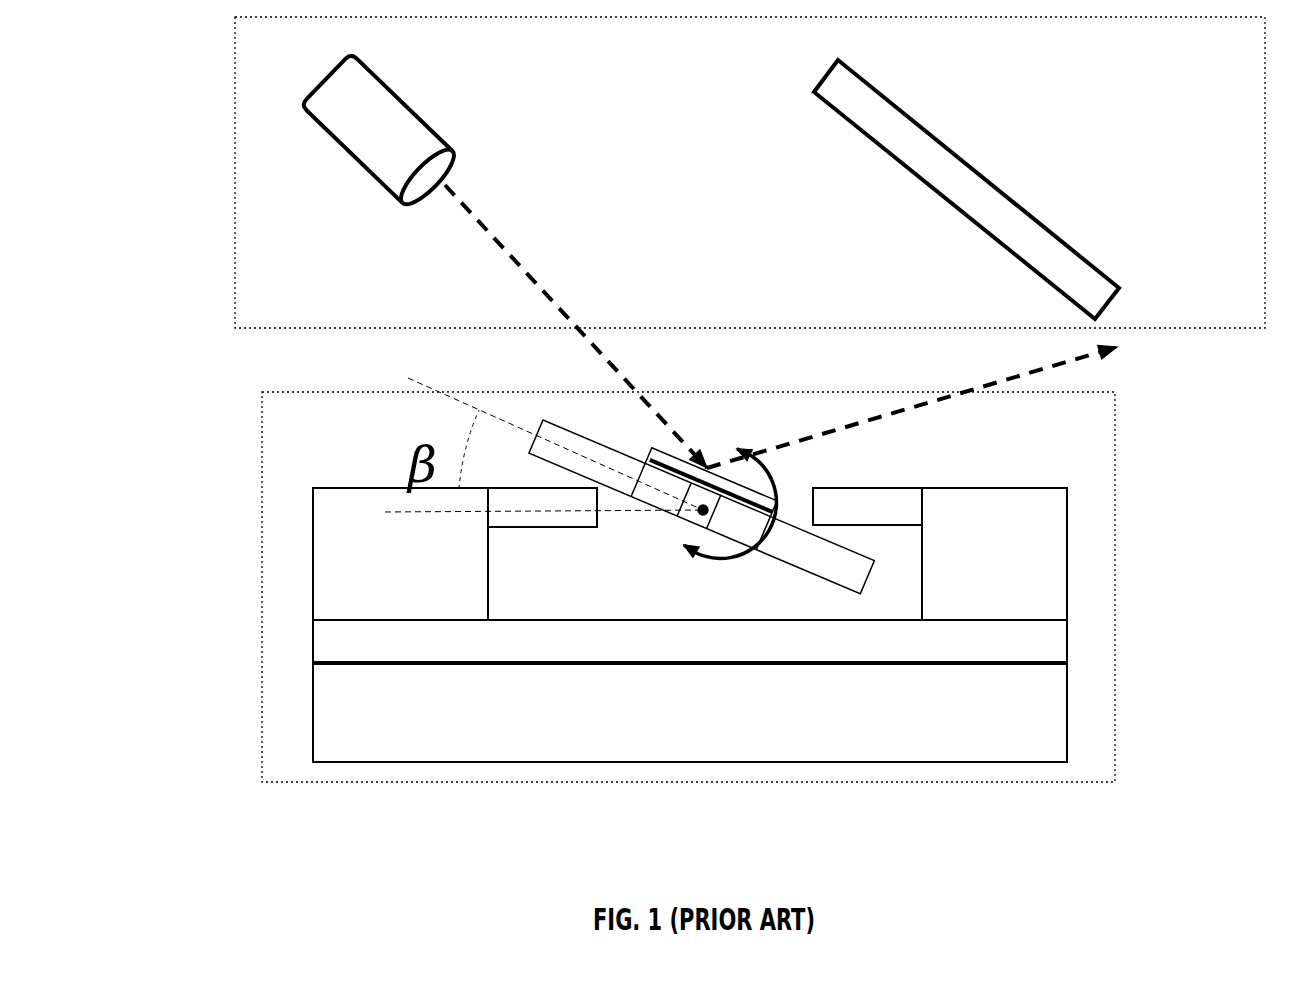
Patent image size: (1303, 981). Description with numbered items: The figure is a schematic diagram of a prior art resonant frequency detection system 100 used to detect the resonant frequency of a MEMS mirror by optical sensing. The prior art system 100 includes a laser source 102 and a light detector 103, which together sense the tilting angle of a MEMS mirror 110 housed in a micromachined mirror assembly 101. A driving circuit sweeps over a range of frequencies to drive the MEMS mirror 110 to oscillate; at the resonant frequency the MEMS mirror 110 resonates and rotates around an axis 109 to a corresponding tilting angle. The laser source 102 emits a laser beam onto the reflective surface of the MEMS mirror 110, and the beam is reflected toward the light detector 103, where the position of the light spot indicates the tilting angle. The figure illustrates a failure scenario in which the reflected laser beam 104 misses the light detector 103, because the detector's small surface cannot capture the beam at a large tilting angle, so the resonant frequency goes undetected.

The prior art resonant frequency detection system 100 is at (750, 172).
The micromachined mirror assembly 101 is at (688, 587).
The laser source 102 is at (347, 115).
The light detector 103 is at (1007, 203).
The reflected laser beam 104 is at (1093, 362).
The axis 109 is at (703, 505).
The MEMS mirror 110 is at (848, 571).